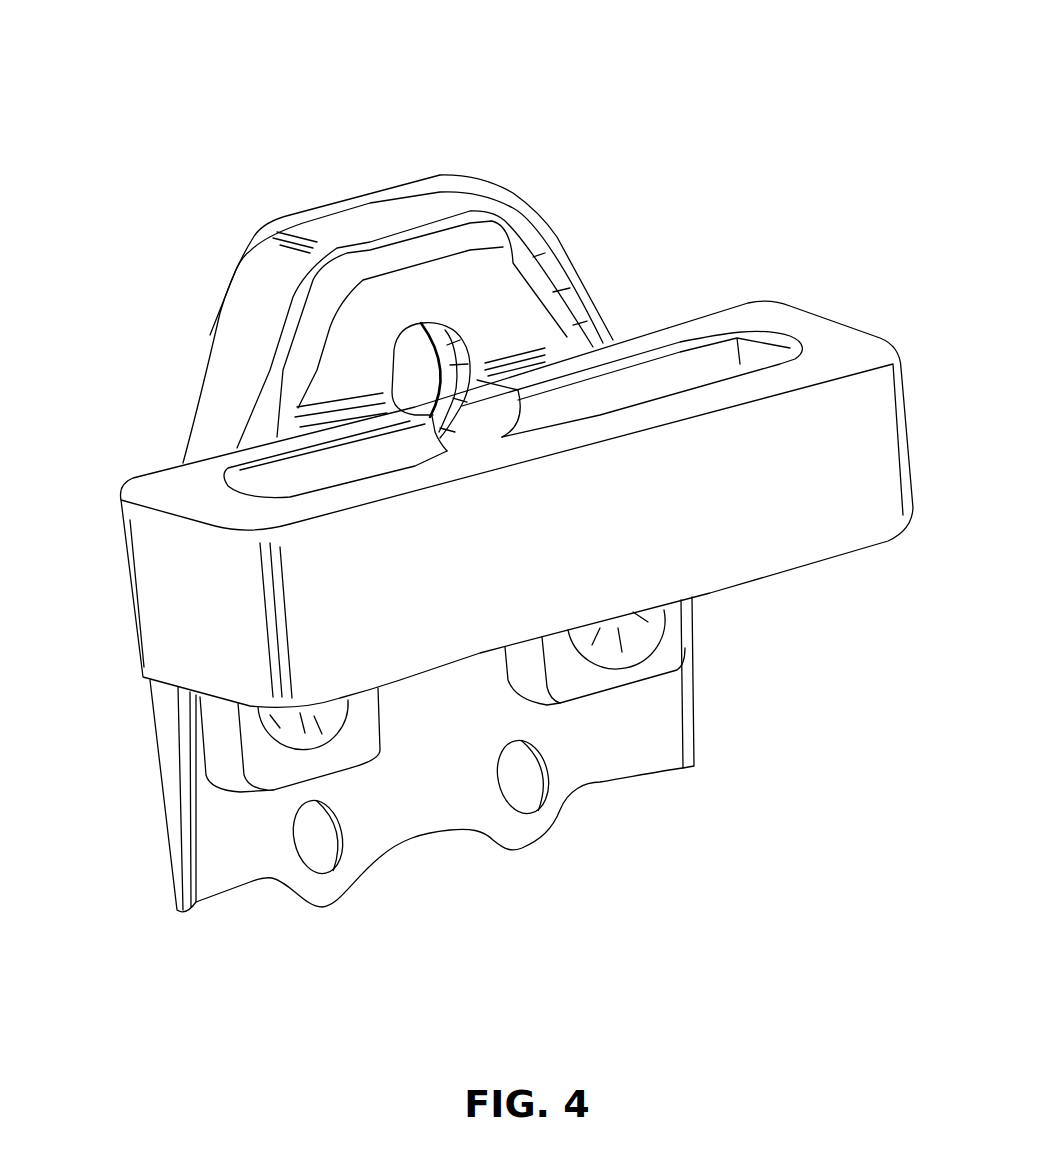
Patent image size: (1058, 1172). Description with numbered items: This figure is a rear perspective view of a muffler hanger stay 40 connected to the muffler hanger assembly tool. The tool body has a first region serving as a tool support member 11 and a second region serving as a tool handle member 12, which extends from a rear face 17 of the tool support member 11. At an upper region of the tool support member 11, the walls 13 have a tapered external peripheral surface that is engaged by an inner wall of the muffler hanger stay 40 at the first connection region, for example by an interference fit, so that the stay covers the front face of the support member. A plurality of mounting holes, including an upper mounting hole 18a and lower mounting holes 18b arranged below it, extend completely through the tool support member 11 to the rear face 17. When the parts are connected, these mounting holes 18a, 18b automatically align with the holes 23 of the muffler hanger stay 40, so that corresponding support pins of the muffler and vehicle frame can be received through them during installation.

The tool support member 11 is at (543, 330).
The tool handle member 12 is at (860, 415).
The walls 13 is at (548, 262).
The rear face 17 is at (423, 289).
The upper mounting hole 18a is at (415, 350).
The lower mounting hole 18b is at (628, 628).
The holes 23 is at (304, 260).
The muffler hanger stay 40 is at (416, 482).